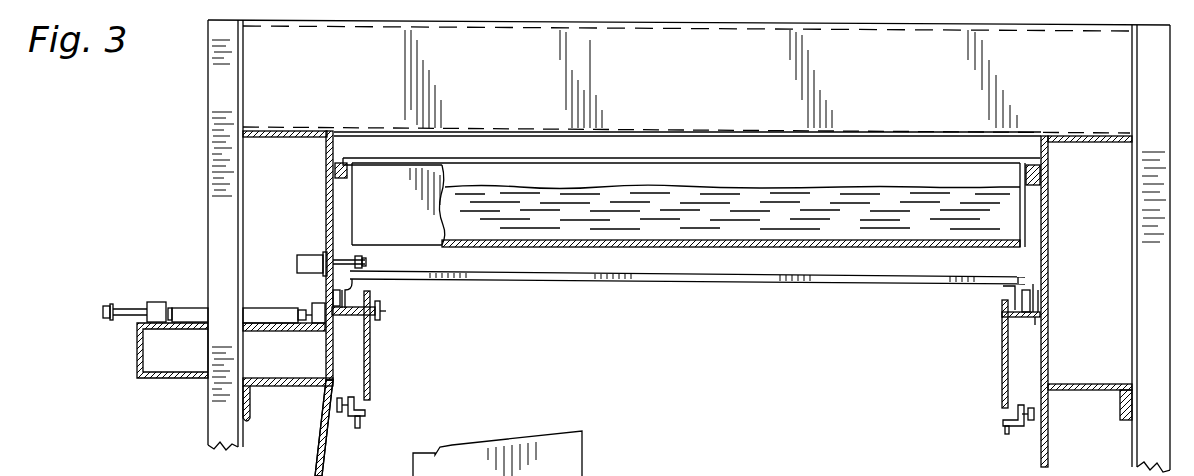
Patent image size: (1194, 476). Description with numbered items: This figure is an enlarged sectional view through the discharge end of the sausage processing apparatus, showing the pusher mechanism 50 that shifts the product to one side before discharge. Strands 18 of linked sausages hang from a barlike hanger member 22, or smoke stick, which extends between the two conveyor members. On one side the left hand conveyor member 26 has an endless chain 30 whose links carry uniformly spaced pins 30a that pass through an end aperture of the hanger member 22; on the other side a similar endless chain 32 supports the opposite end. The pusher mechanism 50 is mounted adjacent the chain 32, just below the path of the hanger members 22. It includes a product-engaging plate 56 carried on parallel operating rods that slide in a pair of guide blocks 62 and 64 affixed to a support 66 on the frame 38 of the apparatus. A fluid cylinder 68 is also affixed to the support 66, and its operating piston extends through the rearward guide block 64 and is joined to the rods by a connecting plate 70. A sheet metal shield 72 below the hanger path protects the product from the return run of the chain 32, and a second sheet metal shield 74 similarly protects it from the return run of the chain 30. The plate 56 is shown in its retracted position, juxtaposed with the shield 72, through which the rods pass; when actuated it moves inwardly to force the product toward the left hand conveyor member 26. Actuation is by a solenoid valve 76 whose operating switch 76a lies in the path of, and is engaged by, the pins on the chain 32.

The strands of linked sausages 18 is at (615, 472).
The hanger member 22 is at (845, 284).
The left hand conveyor member 26 is at (1034, 282).
The endless chain 30 is at (1032, 424).
The pins 30a is at (1018, 264).
The endless chain 32 is at (338, 414).
The frame 38 is at (312, 466).
The pusher mechanism 50 is at (188, 328).
The product-engaging plate 56 is at (380, 312).
The guide block 62 is at (317, 322).
The rearward guide block 64 is at (152, 302).
The support 66 is at (172, 380).
The fluid cylinder 68 is at (180, 308).
The connecting plate 70 is at (110, 306).
The sheet metal shield 72 is at (370, 365).
The second sheet metal shield 74 is at (1002, 360).
The solenoid valve 76 is at (304, 255).
The operating switch 76a is at (365, 260).